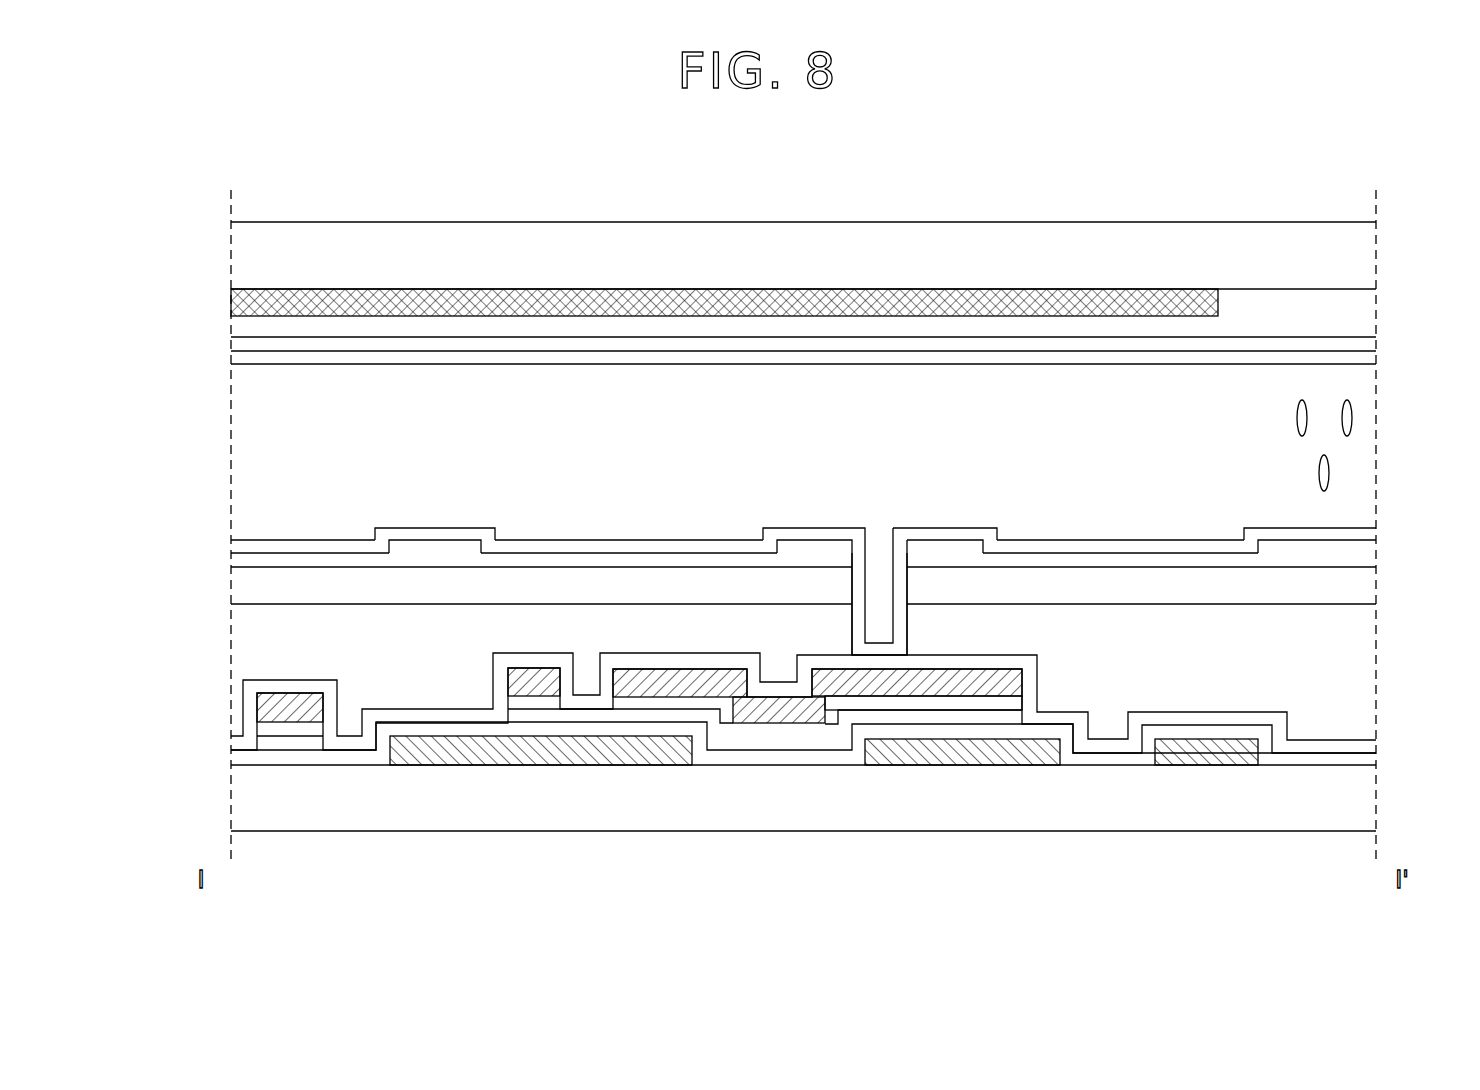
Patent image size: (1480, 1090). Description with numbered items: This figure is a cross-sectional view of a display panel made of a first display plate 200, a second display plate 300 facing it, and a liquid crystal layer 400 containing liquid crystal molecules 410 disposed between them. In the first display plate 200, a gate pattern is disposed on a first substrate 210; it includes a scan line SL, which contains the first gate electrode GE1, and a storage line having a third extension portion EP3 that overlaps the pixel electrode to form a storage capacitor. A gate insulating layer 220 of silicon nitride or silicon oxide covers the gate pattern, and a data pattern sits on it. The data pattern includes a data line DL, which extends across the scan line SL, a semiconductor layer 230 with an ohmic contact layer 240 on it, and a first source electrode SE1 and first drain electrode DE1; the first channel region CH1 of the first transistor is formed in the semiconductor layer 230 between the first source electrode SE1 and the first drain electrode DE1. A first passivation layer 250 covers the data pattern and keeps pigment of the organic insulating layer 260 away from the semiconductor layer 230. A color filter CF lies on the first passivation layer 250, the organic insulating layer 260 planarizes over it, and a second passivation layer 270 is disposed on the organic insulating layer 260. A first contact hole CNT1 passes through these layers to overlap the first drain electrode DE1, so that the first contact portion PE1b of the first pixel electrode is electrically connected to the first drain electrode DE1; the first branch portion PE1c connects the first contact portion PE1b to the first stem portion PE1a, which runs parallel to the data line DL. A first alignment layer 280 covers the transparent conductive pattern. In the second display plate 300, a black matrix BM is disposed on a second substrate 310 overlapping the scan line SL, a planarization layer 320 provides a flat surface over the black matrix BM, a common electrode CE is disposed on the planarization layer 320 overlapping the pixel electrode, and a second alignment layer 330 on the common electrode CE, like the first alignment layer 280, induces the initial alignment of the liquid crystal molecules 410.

The second display plate 300 is at (146, 222).
The second substrate 310 is at (231, 244).
The planarization layer 320 is at (231, 322).
The black matrix BM is at (798, 296).
The common electrode CE is at (231, 346).
The second alignment layer 330 is at (231, 357).
The liquid crystal layer 400 is at (146, 378).
The liquid crystal molecules 410 is at (1353, 420).
The first display plate 200 is at (146, 535).
The first alignment layer 280 is at (231, 540).
The second passivation layer 270 is at (231, 560).
The organic insulating layer 260 is at (231, 587).
The color filter CF is at (231, 643).
The first passivation layer 250 is at (231, 736).
The gate insulating layer 220 is at (231, 757).
The first substrate 210 is at (231, 795).
The first stem portion PE1a is at (1268, 548).
The first contact portion PE1b is at (957, 548).
The first branch portion PE1c is at (433, 545).
The first contact hole CNT1 is at (886, 558).
The data line DL is at (287, 722).
The scan line SL is at (411, 750).
The first gate electrode GE1 is at (636, 757).
The first source electrode SE1 is at (528, 690).
The first channel region CH1 is at (583, 718).
The first drain electrode DE1 is at (683, 698).
The semiconductor layer 230 is at (900, 718).
The ohmic contact layer 240 is at (952, 704).
The third extension portion EP3 is at (1005, 758).